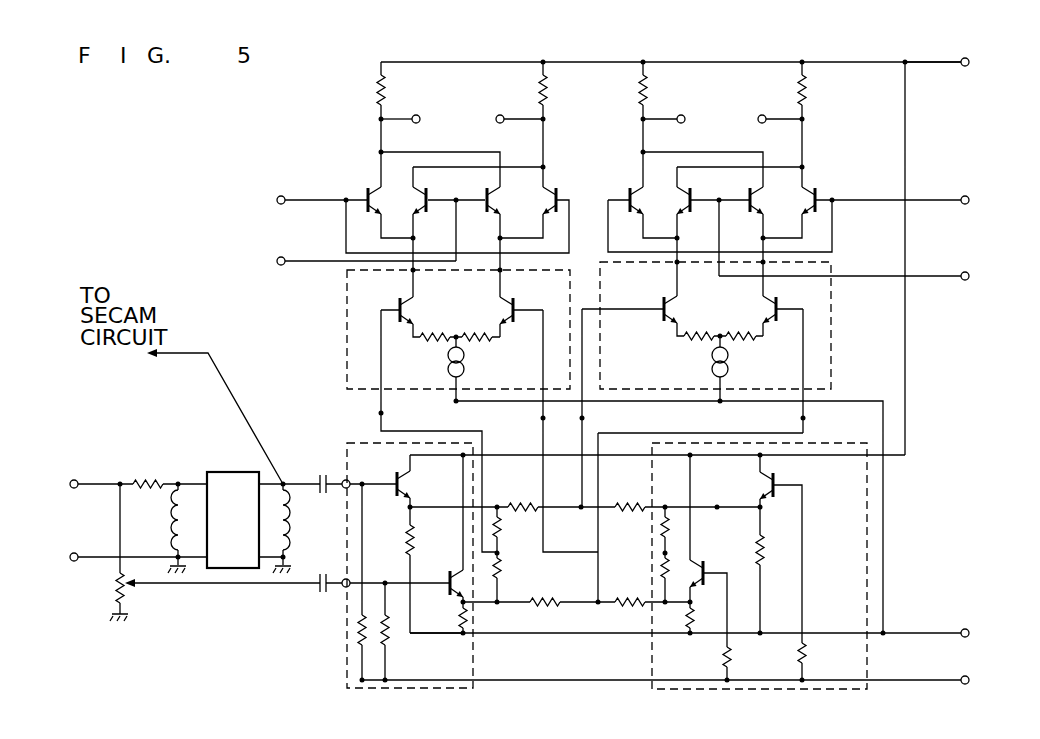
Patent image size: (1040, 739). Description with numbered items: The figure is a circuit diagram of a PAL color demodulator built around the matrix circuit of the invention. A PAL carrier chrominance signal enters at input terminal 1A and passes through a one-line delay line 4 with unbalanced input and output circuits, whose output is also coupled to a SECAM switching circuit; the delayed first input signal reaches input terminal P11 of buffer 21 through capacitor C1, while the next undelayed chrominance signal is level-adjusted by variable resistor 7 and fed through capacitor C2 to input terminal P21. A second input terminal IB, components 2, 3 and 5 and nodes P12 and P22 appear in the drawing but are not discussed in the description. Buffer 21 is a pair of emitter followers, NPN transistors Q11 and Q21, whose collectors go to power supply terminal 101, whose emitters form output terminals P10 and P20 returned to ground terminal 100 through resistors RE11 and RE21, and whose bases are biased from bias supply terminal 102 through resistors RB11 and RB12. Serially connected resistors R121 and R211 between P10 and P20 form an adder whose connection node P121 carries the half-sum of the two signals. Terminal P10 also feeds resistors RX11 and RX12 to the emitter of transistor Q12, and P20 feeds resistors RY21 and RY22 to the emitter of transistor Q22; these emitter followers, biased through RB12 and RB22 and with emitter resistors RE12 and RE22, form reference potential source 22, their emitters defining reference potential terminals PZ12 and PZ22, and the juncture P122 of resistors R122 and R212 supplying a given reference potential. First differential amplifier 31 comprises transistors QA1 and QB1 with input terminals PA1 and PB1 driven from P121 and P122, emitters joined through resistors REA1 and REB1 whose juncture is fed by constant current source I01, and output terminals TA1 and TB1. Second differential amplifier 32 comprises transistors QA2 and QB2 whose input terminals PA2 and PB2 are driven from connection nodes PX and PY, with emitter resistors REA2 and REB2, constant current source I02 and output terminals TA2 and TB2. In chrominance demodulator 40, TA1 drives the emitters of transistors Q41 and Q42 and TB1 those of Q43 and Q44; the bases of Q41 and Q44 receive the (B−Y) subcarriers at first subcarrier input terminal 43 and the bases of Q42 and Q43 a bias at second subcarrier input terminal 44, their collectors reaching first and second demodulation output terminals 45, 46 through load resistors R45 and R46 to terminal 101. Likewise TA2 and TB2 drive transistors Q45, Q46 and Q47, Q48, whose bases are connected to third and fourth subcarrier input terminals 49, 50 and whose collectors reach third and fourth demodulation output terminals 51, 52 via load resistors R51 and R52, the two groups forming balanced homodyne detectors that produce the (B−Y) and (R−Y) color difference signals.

The chrominance demodulator 40 is at (603, 57).
The power supply terminal 101 is at (963, 62).
The first load resistor R45 is at (376, 100).
The first demodulation output terminal 45 is at (406, 108).
The second load resistor R46 is at (548, 93).
The second demodulation output terminal 46 is at (515, 108).
The third load resistor R51 is at (650, 92).
The third demodulation output terminal 51 is at (681, 120).
The fourth demodulation output terminal 52 is at (765, 120).
The fourth load resistor R52 is at (808, 92).
The NPN transistor Q41 is at (363, 187).
The NPN transistor Q42 is at (421, 186).
The NPN transistor Q43 is at (504, 216).
The NPN transistor Q44 is at (555, 186).
The NPN transistor Q45 is at (630, 188).
The NPN transistor Q46 is at (684, 220).
The NPN transistor Q47 is at (750, 189).
The NPN transistor Q48 is at (812, 186).
The first subcarrier input terminal 43 is at (303, 200).
The second subcarrier input terminal 44 is at (347, 261).
The third subcarrier input terminal 49 is at (920, 200).
The fourth subcarrier input terminal 50 is at (861, 277).
The first differential amplifier 31 is at (340, 338).
The output terminal TA1 is at (414, 271).
The output terminal TB1 is at (503, 271).
The NPN transistor QA1 is at (397, 296).
The NPN transistor QB1 is at (506, 312).
The resistor REA1 is at (414, 339).
The resistor REB1 is at (479, 339).
The constant current source I01 is at (467, 372).
The input terminal PA1 is at (383, 413).
The input terminal PB1 is at (542, 418).
The second differential amplifier 32 is at (832, 345).
The output terminal TA2 is at (674, 262).
The output terminal TB2 is at (763, 262).
The NPN transistor QA2 is at (673, 306).
The NPN transistor QB2 is at (770, 308).
The resistor REA2 is at (677, 340).
The resistor REB2 is at (737, 342).
The constant current source I02 is at (709, 369).
The input terminal PA2 is at (583, 418).
The input terminal PB2 is at (805, 418).
The input terminal 1A is at (60, 485).
The input terminal IB is at (60, 557).
The resistor 2 is at (148, 470).
The inductor 3 is at (167, 527).
The 1H delay line 4 is at (232, 470).
The inductor 5 is at (294, 534).
The variable resistor 7 is at (109, 597).
The capacitor C1 is at (316, 472).
The capacitor C2 is at (324, 602).
The input terminal P11 is at (342, 478).
The input terminal P21 is at (348, 581).
The buffer 21 is at (461, 673).
The NPN transistor Q11 is at (413, 477).
The output terminal P10 is at (428, 504).
The resistor RE11 is at (413, 543).
The NPN transistor Q21 is at (447, 576).
The resistor RE21 is at (441, 621).
The resistor RB11 is at (356, 637).
The resistor RB12 is at (388, 628).
The output terminal P20 is at (482, 604).
The resistor RX11 is at (513, 502).
The resistor R121 is at (494, 530).
The connection node P121 is at (498, 553).
The resistor R211 is at (498, 580).
The resistor RY21 is at (535, 617).
The connection node PX is at (579, 511).
The connector node PY is at (590, 604).
The reference potential source 22 is at (656, 692).
The resistor RX12 is at (631, 502).
The resistor R122 is at (662, 524).
The third reference potential terminal P122 is at (667, 553).
The resistor R212 is at (664, 570).
The resistor RY22 is at (617, 617).
The first reference potential terminal PZ12 is at (717, 506).
The second reference potential terminal PZ22 is at (673, 604).
The NPN transistor Q22 is at (708, 563).
The resistor RE22 is at (700, 622).
The resistor RB22 is at (740, 649).
The node P22 is at (730, 682).
The node P12 is at (804, 682).
The NPN transistor Q12 is at (790, 470).
The resistor RE12 is at (768, 552).
The ground terminal 100 is at (952, 637).
The bias supply terminal 102 is at (952, 682).